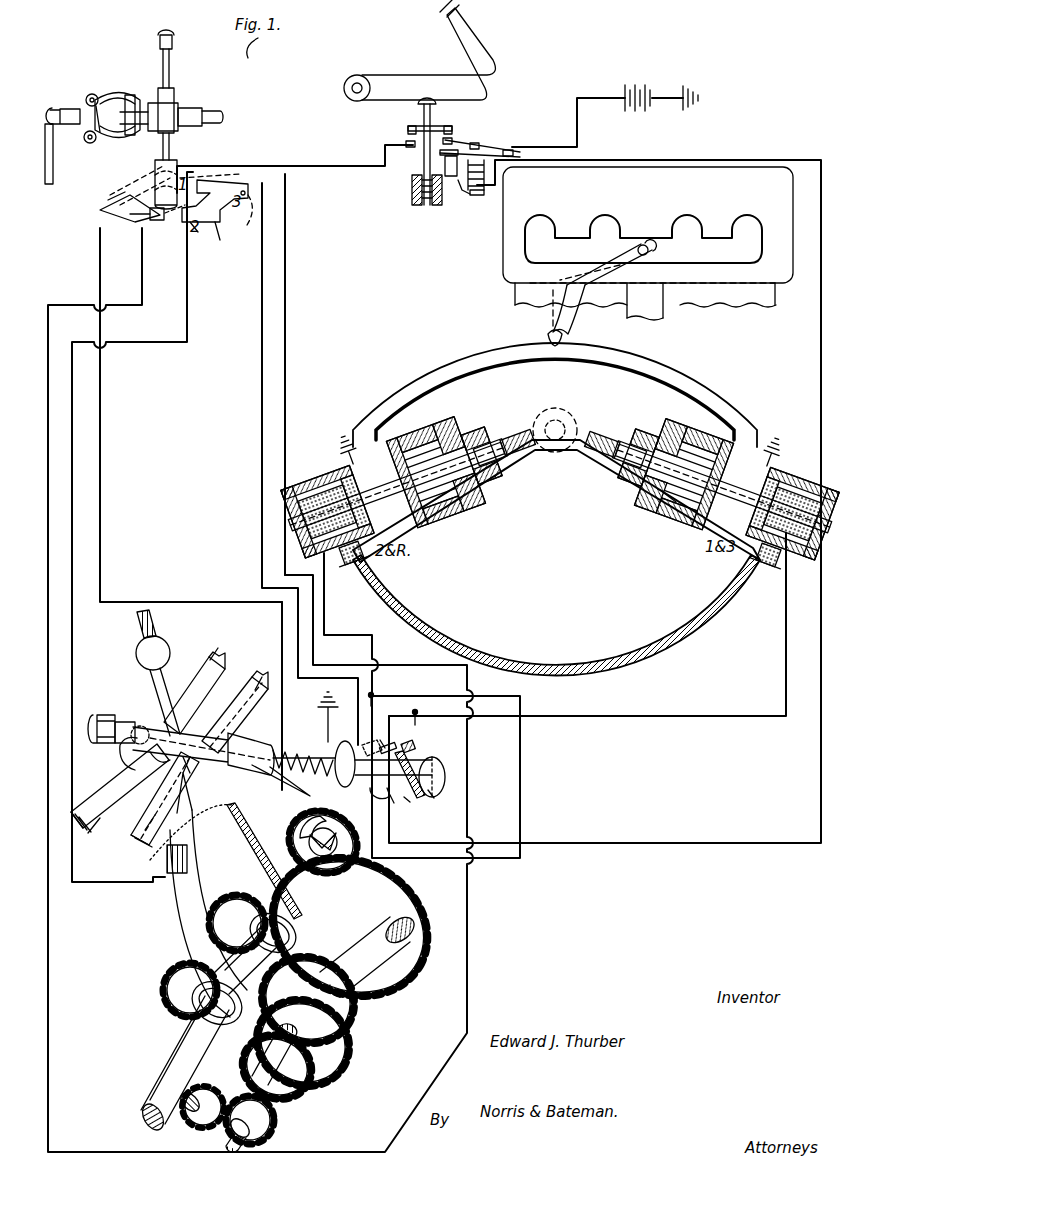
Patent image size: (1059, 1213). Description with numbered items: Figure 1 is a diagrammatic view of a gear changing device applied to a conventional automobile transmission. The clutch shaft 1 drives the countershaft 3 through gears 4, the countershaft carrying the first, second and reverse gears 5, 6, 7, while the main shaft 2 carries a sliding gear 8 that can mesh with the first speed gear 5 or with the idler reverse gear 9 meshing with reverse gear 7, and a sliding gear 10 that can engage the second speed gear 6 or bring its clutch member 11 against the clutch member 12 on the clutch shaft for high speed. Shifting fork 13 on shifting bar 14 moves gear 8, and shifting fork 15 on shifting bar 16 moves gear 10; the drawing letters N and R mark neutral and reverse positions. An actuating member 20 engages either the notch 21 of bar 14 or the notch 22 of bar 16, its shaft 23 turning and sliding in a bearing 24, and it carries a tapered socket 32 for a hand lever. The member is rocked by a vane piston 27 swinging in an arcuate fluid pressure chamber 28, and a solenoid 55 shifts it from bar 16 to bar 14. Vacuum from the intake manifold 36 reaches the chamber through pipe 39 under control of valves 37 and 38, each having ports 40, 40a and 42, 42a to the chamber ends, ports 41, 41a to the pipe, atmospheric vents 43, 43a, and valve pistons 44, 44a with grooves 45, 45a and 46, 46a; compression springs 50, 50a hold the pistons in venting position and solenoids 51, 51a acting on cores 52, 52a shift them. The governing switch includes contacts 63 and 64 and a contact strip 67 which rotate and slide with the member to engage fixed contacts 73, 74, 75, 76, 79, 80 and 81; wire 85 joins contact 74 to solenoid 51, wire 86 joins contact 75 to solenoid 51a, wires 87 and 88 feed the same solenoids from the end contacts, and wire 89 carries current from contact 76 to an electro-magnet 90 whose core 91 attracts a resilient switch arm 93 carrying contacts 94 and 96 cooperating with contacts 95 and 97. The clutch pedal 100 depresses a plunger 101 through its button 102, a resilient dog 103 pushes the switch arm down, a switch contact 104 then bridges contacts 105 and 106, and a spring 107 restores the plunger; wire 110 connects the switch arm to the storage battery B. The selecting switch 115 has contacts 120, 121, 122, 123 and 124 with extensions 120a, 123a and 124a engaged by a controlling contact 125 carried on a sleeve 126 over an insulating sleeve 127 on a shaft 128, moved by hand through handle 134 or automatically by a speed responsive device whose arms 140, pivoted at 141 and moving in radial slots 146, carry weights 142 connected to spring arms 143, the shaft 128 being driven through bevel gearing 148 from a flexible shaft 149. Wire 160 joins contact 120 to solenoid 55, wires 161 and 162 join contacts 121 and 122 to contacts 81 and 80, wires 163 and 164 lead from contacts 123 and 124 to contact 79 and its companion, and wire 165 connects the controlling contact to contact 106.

The clutch shaft 1 is at (262, 677).
The main shaft 2 is at (88, 833).
The countershaft 3 is at (218, 648).
The gears 4 is at (360, 882).
The first speed gear 5 is at (313, 1090).
The second speed gear 6 is at (348, 1058).
The reverse gear 7 is at (273, 1127).
The sliding gear 8 is at (165, 985).
The idler reverse gear 9 is at (188, 1120).
The sliding gear 10 is at (228, 905).
The clutch member 11 is at (300, 834).
The clutch member 12 is at (310, 838).
The shifting fork 13 is at (172, 918).
The shifting bar 14 is at (142, 820).
The shifting fork 15 is at (233, 860).
The shifting bar 16 is at (120, 770).
The actuating member 20 is at (222, 715).
The notch 21 is at (195, 778).
The notch 22 is at (150, 772).
The shaft 23 is at (137, 722).
The bearing 24 is at (106, 715).
The piston 27 is at (268, 780).
The arcuate fluid pressure chamber 28 is at (692, 642).
The socket 32 is at (185, 712).
The intake manifold 36 is at (648, 250).
The valve 37 is at (458, 418).
The valve 38 is at (652, 410).
The pipe 39 is at (636, 362).
The port 40 is at (480, 507).
The port 41 is at (452, 515).
The port 42 is at (492, 480).
The atmospheric vent port 43 is at (512, 440).
The valve piston 44 is at (480, 440).
The groove 45 is at (400, 455).
The groove 46 is at (425, 436).
The compression spring 50 is at (332, 472).
The solenoid 51 is at (340, 450).
The solenoid core 52 is at (350, 566).
The port 40a is at (670, 500).
The port 41a is at (678, 520).
The port 42a is at (625, 480).
The atmospheric vent port 43a is at (610, 432).
The valve piston 44a is at (705, 445).
The groove 45a is at (690, 510).
The groove 46a is at (688, 428).
The compression spring 50a is at (792, 550).
The solenoid 51a is at (778, 475).
The solenoid core 52a is at (762, 578).
The solenoid 55 is at (296, 748).
The contact 63 is at (407, 800).
The contact 64 is at (428, 752).
The contact strip 67 is at (416, 740).
The contact 73 is at (342, 795).
The contact 74 is at (382, 802).
The contact 75 is at (394, 745).
The contact 76 is at (394, 803).
The contact 79 is at (375, 739).
The contact 80 is at (434, 800).
The contact 81 is at (446, 774).
The wire 85 is at (344, 635).
The wire 86 is at (635, 716).
The wire 87 is at (371, 700).
The wire 88 is at (415, 712).
The wire 89 is at (627, 166).
The electro-magnet 90 is at (463, 190).
The core 91 is at (477, 194).
The switch arm 93 is at (508, 150).
The contact 94 is at (459, 165).
The contact 95 is at (468, 182).
The contact 96 is at (458, 153).
The contact 97 is at (470, 153).
The clutch pedal 100 is at (420, 85).
The plunger 101 is at (424, 112).
The button 102 is at (440, 104).
The resilient dog 103 is at (452, 140).
The switch contact 104 is at (445, 126).
The contact 105 is at (478, 143).
The contact 106 is at (406, 143).
The spring 107 is at (422, 205).
The wire 110 is at (577, 118).
The selecting switch 115 is at (174, 100).
The contact 120 is at (100, 212).
The extension 120a is at (172, 222).
The contact 121 is at (188, 178).
The contact 122 is at (150, 220).
The contact 123 is at (217, 240).
The extension 123a is at (192, 230).
The contact 124 is at (238, 182).
The extension 124a is at (246, 230).
The controlling contact 125 is at (155, 165).
The sleeve 126 is at (178, 120).
The inner sleeve 127 is at (212, 110).
The shaft 128 is at (218, 122).
The handle 134 is at (172, 66).
The arms 140 is at (120, 92).
The pivot 141 is at (133, 97).
The weights 142 is at (92, 94).
The spring arm 143 is at (96, 120).
The radial slots 146 is at (128, 100).
The bevel gearing 148 is at (62, 108).
The flexible shaft 149 is at (49, 180).
The wire 160 is at (100, 262).
The wire 161 is at (285, 405).
The wire 162 is at (121, 305).
The wire 163 is at (72, 640).
The wire 164 is at (262, 460).
The wire 165 is at (300, 166).
The storage battery B is at (623, 92).
The neutral position N is at (115, 200).
The reverse position R is at (145, 830).